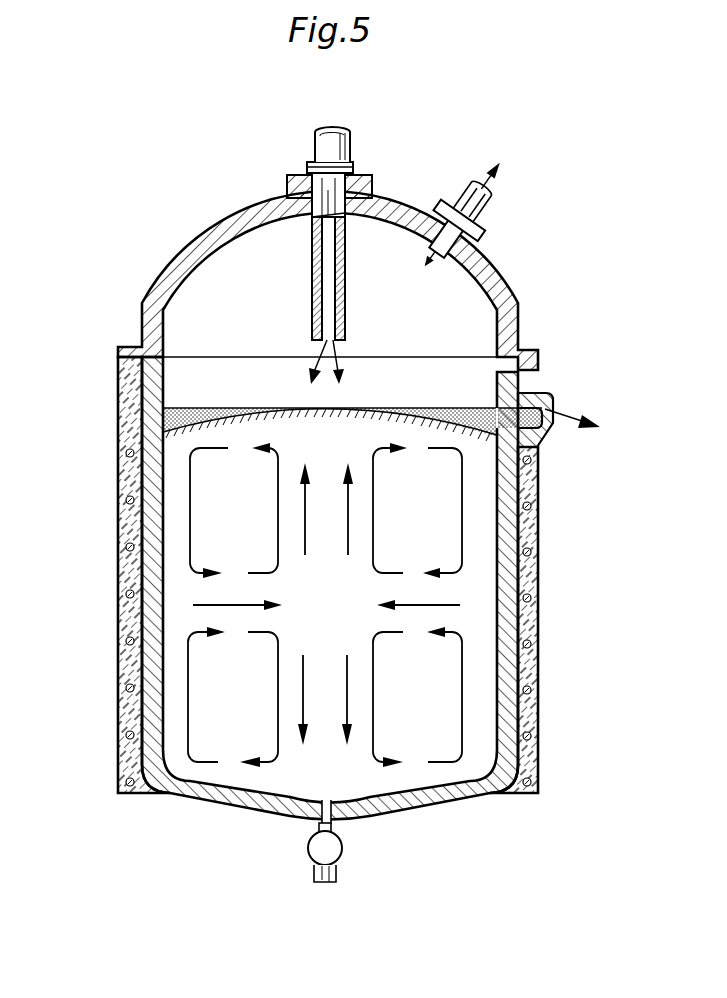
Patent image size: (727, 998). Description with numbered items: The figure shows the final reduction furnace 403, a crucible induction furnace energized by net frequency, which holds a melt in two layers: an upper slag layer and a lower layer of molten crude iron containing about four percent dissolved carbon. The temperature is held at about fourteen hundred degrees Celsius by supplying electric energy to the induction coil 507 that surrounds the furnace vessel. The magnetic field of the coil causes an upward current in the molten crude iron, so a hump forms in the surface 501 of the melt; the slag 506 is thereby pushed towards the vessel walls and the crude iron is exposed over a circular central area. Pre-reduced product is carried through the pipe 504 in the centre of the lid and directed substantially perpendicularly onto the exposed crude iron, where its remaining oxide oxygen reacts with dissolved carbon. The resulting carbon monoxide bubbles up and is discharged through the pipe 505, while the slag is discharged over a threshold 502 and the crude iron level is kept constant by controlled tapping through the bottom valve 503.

The final reduction furnace 403 is at (108, 433).
The surface of the melt 501 is at (353, 406).
The outlet spout 502 is at (528, 423).
The bottom valve 503 is at (345, 848).
The pipe 504 is at (345, 298).
The pipe 505 is at (497, 204).
The slag 506 is at (478, 408).
The induction coil 507 is at (532, 598).